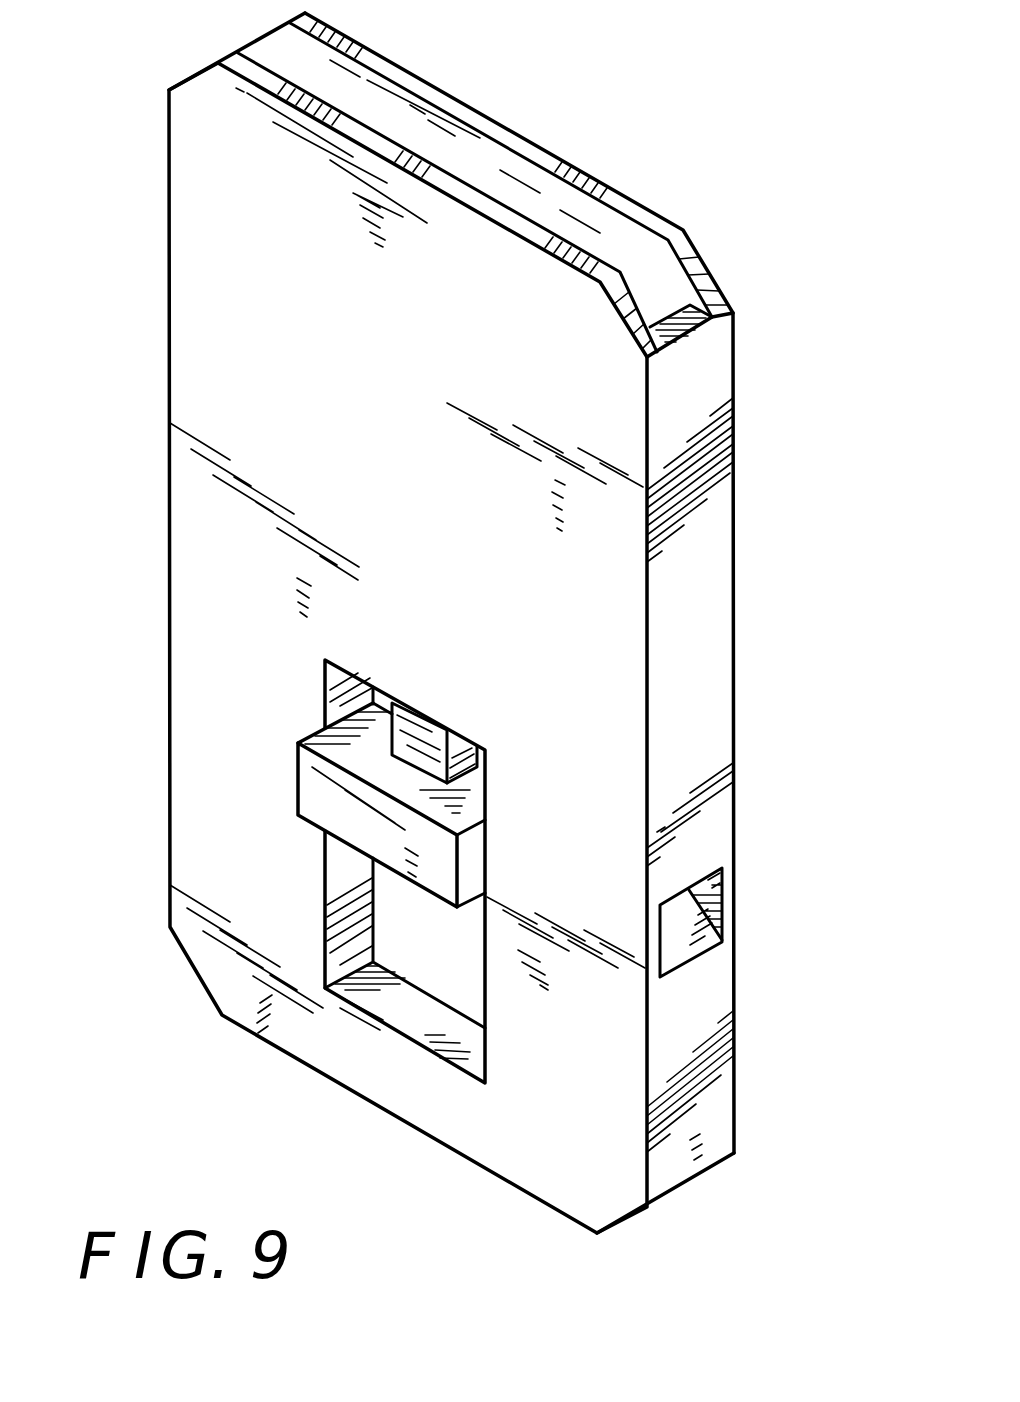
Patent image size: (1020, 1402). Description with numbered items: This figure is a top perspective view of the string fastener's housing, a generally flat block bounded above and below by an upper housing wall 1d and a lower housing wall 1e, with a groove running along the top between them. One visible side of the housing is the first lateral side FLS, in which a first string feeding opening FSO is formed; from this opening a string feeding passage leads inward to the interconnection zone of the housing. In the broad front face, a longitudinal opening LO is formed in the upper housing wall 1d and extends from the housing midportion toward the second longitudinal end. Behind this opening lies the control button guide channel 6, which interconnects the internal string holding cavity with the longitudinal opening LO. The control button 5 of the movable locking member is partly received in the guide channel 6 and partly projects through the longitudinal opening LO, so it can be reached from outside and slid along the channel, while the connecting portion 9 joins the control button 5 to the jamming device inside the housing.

The upper housing wall 1d is at (473, 195).
The lower housing wall 1e is at (580, 168).
The first lateral side FLS is at (703, 553).
The first string feeding opening FSO is at (720, 892).
The longitudinal opening LO is at (484, 982).
The control button guide channel 6 is at (397, 932).
The control button 5 is at (445, 853).
The connecting portion 9 is at (423, 725).